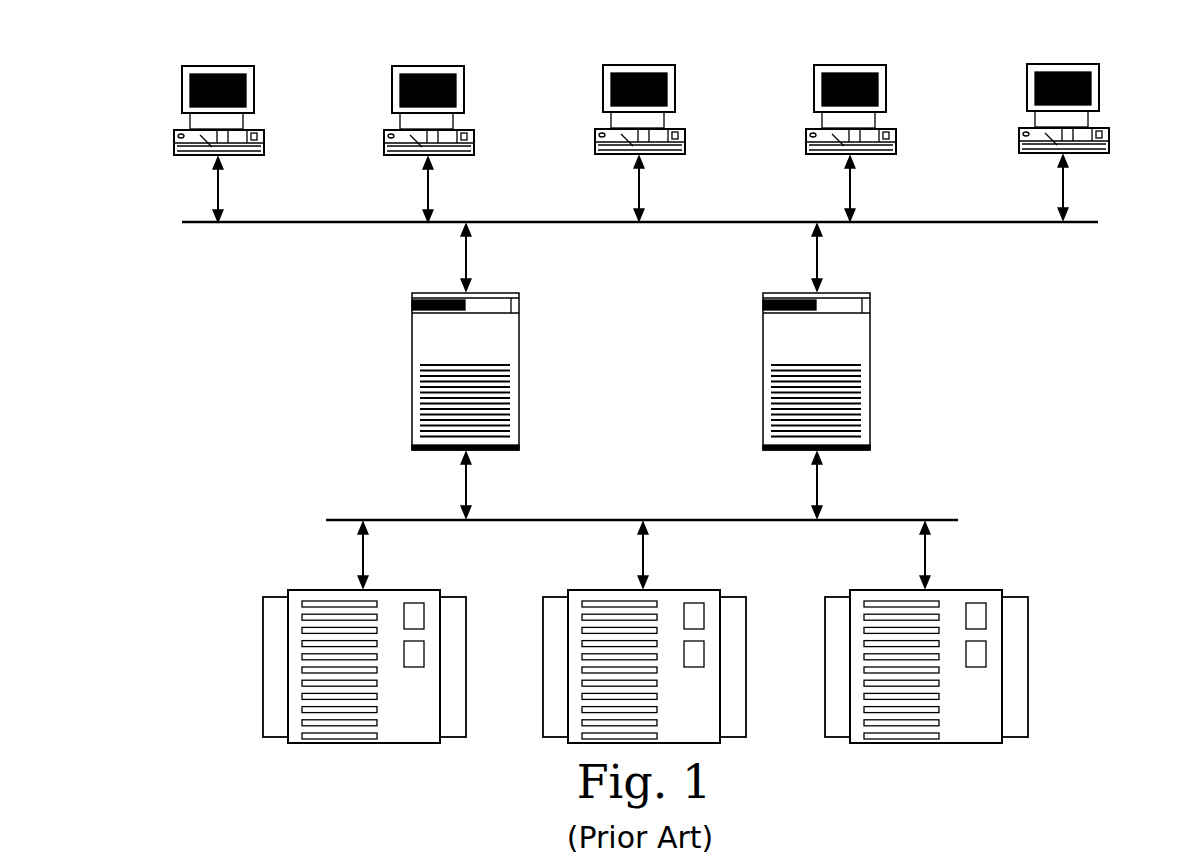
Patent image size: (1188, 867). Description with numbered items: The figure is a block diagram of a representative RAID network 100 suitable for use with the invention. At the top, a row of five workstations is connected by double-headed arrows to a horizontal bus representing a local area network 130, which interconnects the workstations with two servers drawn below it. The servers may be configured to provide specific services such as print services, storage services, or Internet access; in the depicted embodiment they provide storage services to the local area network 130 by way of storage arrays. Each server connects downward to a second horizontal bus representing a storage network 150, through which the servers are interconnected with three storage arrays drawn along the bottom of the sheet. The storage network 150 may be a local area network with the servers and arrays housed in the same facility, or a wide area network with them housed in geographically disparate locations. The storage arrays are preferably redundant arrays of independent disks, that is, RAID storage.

The RAID network 100 is at (140, 88).
The local area network 130 is at (532, 221).
The storage network 150 is at (571, 519).